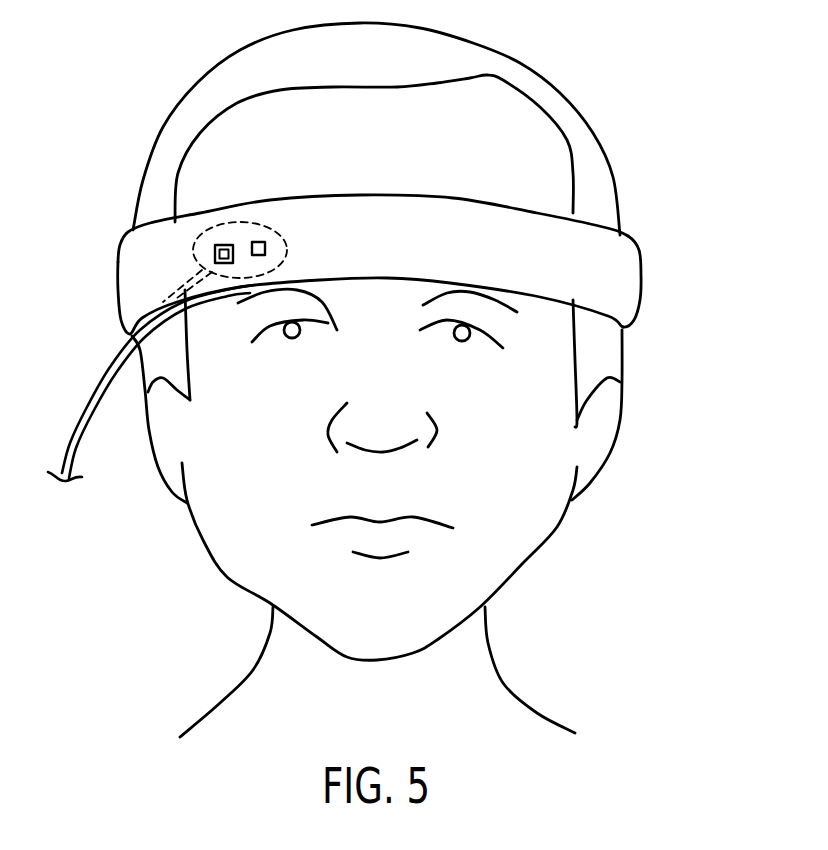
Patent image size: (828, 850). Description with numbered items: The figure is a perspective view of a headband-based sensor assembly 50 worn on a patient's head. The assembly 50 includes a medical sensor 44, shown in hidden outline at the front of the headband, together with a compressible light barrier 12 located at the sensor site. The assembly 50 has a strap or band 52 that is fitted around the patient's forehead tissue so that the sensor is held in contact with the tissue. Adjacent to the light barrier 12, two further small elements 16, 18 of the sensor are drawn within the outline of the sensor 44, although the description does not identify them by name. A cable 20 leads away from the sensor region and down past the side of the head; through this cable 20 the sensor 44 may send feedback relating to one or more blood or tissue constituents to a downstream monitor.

The compressible light barrier 12 is at (157, 249).
The light emitter / electrode 16 is at (215, 247).
The detector 18 is at (258, 242).
The cable 20 is at (100, 383).
The medical sensor 44 is at (212, 232).
The headband-based sensor assembly 50 is at (430, 274).
The strap or band 52 is at (612, 295).